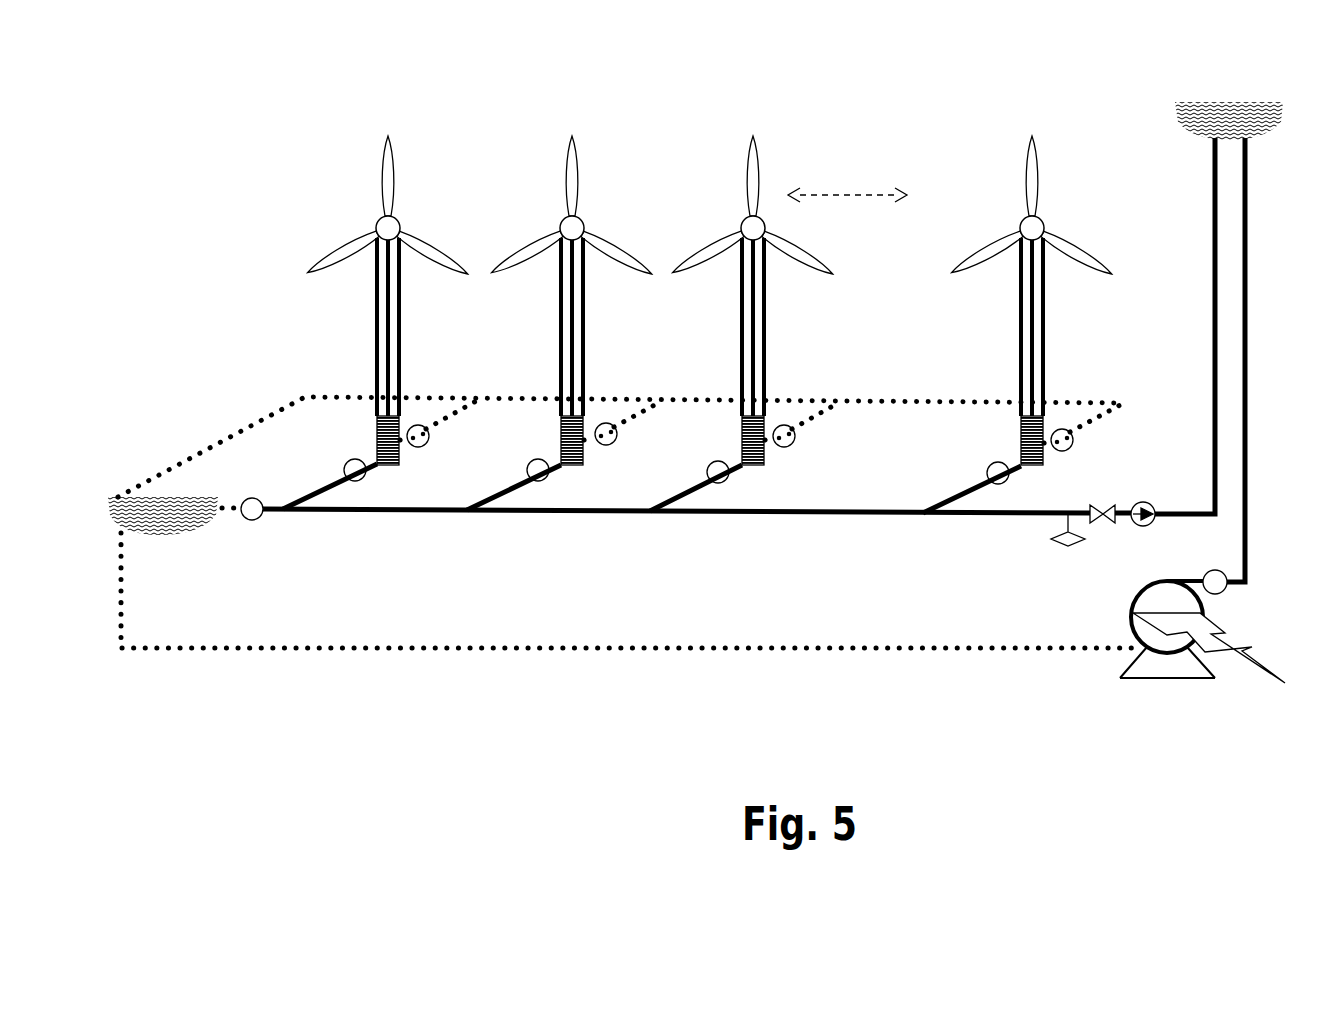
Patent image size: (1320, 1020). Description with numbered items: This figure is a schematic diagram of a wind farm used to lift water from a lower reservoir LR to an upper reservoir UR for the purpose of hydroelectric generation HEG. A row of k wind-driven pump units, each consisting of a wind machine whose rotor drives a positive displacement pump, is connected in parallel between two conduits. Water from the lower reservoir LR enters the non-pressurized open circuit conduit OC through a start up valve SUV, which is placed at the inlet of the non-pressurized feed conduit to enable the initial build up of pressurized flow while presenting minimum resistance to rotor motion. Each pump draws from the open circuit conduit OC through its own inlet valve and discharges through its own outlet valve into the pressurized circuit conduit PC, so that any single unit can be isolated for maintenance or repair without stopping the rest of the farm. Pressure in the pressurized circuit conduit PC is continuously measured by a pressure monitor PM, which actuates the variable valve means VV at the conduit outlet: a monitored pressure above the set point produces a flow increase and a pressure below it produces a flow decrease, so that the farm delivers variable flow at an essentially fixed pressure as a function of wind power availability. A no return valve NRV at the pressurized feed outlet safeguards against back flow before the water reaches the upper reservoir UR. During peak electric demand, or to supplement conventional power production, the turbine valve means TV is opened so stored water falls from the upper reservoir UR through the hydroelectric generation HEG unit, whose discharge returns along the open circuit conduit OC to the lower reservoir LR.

The lower reservoir LR is at (173, 533).
The upper reservoir UR is at (1229, 104).
The start up valve SUV is at (244, 522).
The pressurized circuit conduit PC is at (855, 532).
The open circuit conduit OC is at (962, 390).
The pressure monitor PM is at (1068, 541).
The variable valve means VV is at (1102, 527).
The no return valve NRV is at (1144, 525).
The turbine valve means TV is at (1206, 366).
The hydroelectric generation HEG is at (1202, 643).